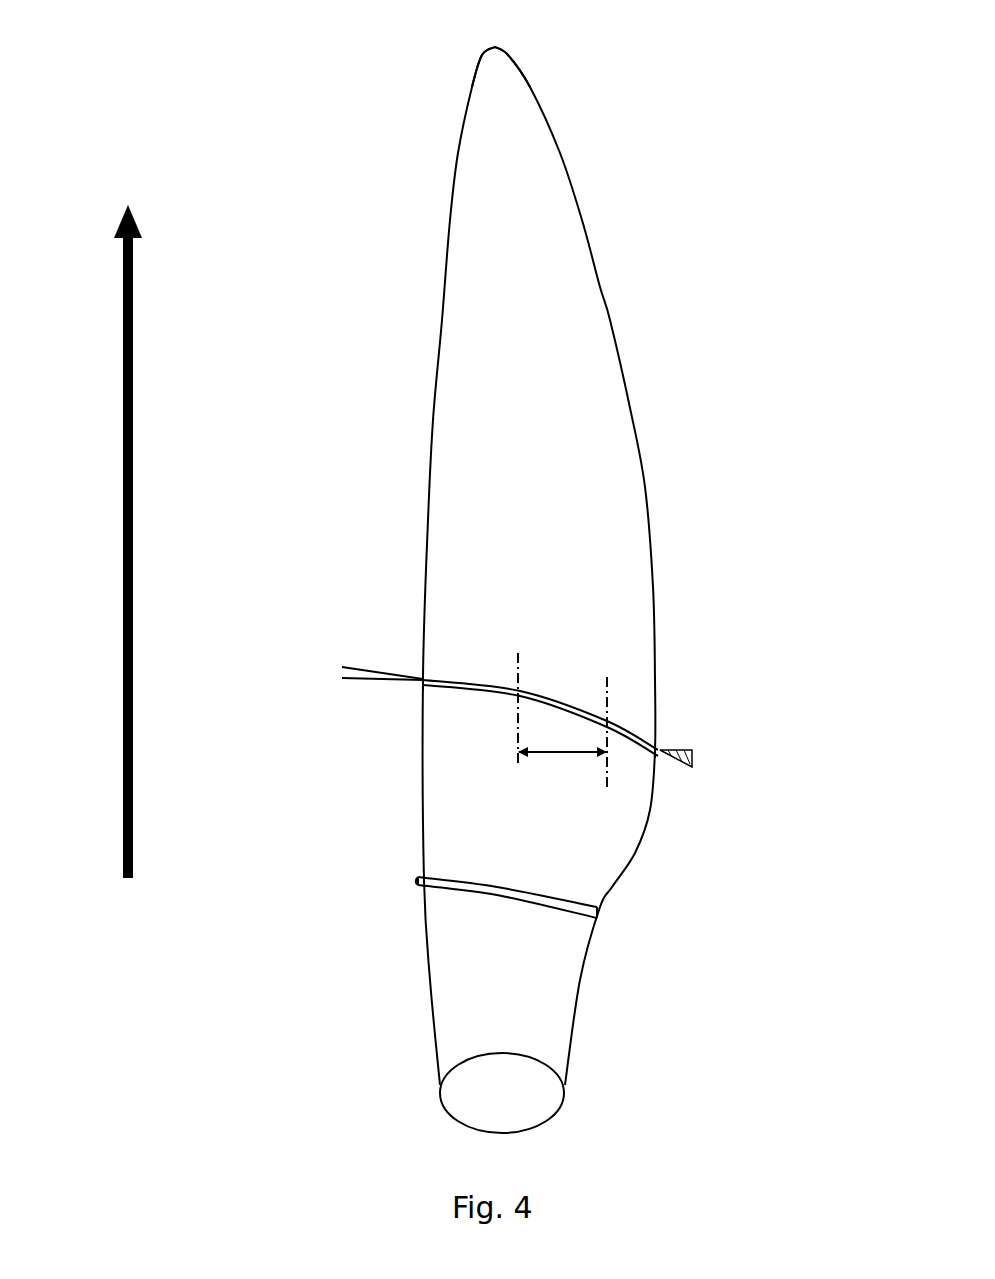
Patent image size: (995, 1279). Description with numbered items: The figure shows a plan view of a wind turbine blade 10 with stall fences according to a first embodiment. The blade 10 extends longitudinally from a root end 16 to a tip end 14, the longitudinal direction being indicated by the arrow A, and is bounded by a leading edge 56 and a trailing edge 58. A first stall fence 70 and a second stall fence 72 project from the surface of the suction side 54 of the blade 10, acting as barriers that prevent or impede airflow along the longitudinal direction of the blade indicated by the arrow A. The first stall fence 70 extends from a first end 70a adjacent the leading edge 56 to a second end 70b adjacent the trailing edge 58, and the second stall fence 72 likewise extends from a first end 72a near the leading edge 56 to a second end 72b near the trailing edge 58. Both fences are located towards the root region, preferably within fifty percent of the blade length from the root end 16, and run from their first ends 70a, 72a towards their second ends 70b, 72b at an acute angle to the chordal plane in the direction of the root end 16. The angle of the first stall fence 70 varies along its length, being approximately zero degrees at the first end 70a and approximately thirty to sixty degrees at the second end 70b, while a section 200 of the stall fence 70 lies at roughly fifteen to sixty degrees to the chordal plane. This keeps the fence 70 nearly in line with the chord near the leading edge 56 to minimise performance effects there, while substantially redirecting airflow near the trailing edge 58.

The wind turbine blade 10 is at (545, 592).
The tip end 14 is at (445, 77).
The root end 16 is at (414, 1114).
The suction side 54 is at (528, 482).
The leading edge 56 is at (413, 320).
The trailing edge 58 is at (633, 407).
The first stall fence 70 is at (522, 692).
The first end of first stall fence 70a is at (423, 677).
The second end of first stall fence 70b is at (637, 747).
The second stall fence 72 is at (491, 887).
The first end of second stall fence 72a is at (410, 880).
The second end of second stall fence 72b is at (578, 912).
The section of stall fence 200 is at (568, 758).
The arrow indicating longitudinal direction A is at (109, 541).